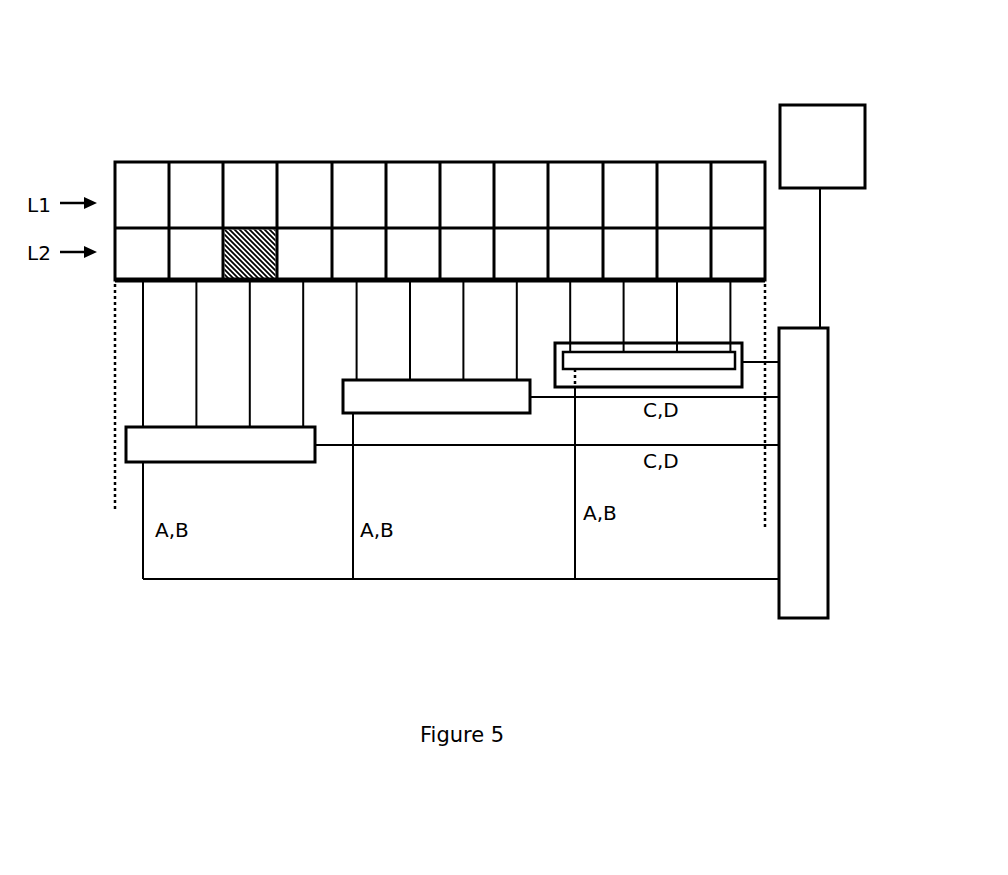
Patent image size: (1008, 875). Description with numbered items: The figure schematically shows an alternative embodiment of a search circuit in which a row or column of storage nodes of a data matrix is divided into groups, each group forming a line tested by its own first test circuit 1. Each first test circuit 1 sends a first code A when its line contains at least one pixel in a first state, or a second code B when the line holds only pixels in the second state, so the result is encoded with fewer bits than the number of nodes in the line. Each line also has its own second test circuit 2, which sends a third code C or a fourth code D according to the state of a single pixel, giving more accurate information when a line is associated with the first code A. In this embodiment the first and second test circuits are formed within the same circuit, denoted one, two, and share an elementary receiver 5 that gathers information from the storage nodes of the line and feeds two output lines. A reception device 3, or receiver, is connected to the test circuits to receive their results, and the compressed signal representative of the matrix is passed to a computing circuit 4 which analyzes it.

The first test circuit 1 is at (230, 462).
The second test circuit 2 is at (742, 343).
The reception device 3 is at (796, 618).
The computing circuit 4 is at (820, 105).
The elementary receiver 5 is at (719, 369).